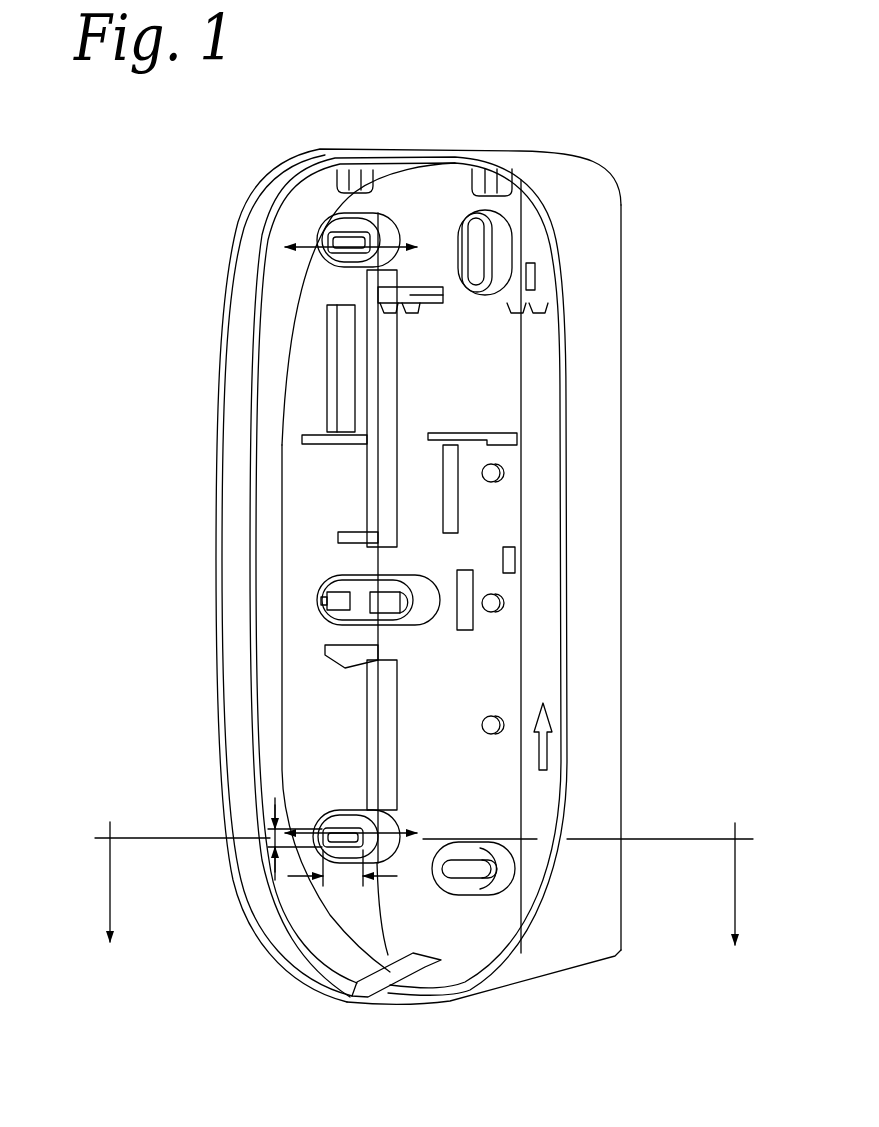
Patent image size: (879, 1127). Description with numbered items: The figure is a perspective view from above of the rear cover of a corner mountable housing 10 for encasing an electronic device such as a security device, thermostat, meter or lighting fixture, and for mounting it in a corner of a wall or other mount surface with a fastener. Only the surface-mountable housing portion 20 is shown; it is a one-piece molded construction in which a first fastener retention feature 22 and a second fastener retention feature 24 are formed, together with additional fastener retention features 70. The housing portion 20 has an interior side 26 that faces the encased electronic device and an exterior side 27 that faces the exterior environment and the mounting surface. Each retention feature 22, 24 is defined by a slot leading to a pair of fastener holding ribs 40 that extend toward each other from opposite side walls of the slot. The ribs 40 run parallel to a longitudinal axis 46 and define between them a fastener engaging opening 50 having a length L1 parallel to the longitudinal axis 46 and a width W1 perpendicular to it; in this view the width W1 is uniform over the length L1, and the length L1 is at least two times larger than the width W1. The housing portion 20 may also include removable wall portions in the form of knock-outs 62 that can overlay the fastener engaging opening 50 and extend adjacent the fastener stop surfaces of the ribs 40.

The corner mountable housing 10 is at (676, 176).
The surface-mountable housing portion 20 is at (611, 266).
The first fastener retention feature 22 is at (322, 230).
The second fastener retention feature 24 is at (318, 815).
The interior side 26 is at (533, 392).
The exterior side 27 is at (611, 413).
The fastener holding ribs 40 is at (337, 232).
The longitudinal axis 46 is at (464, 842).
The fastener engaging opening 50 is at (340, 248).
The knock-outs 62 is at (343, 604).
The additional fastener retention features 70 is at (335, 590).
The width of the fastener engaging opening W1 is at (272, 808).
The length of the fastener engaging opening L1 is at (310, 878).